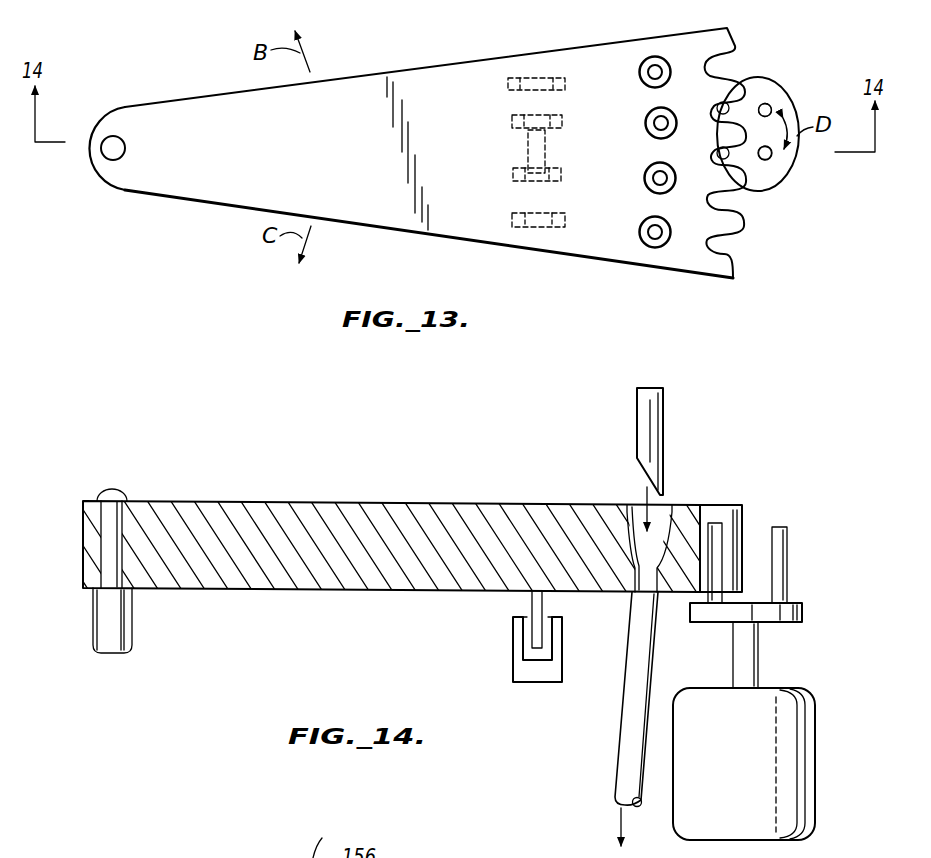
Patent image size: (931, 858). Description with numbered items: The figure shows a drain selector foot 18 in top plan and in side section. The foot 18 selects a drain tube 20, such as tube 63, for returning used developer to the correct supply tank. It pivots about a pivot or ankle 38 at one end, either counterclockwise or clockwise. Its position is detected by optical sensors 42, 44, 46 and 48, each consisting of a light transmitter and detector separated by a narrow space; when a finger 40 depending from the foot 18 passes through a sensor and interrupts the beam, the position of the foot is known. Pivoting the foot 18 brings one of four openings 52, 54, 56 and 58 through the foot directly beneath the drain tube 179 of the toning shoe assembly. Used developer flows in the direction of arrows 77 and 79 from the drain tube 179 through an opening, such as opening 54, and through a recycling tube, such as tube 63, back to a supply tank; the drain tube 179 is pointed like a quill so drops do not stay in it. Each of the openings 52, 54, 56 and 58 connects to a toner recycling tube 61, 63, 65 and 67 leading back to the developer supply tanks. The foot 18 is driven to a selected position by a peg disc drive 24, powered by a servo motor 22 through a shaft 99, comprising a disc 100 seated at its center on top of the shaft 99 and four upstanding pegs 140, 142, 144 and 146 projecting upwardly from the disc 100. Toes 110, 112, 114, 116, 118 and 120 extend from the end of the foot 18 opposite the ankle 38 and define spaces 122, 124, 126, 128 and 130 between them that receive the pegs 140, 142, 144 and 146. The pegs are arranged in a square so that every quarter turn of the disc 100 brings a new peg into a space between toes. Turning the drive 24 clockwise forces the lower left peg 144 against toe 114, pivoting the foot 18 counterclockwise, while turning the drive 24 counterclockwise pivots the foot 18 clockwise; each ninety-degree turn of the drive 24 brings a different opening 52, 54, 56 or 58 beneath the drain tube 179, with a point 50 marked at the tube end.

In FIG. 13, the drain selector foot 18 is at (360, 152).
In FIG. 14, the drain selector foot 18 is at (398, 508).
In FIG. 13, the pivot or ankle 38 is at (124, 149).
In FIG. 14, the pivot or ankle 38 is at (133, 612).
In FIG. 13, the finger 40 is at (527, 146).
In FIG. 14, the finger 40 is at (531, 598).
In FIG. 13, the optical sensor 42 is at (506, 86).
In FIG. 13, the optical sensor 44 is at (510, 122).
In FIG. 14, the optical sensor 44 is at (512, 652).
In FIG. 13, the optical sensor 46 is at (512, 174).
In FIG. 13, the optical sensor 48 is at (510, 218).
In FIG. 13, the opening 52 is at (655, 40).
In FIG. 13, the opening 54 is at (648, 126).
In FIG. 14, the opening 54 is at (624, 506).
In FIG. 13, the opening 56 is at (648, 172).
In FIG. 13, the opening 58 is at (650, 247).
In FIG. 13, the toner recycling tube 61 is at (641, 70).
In FIG. 13, the toner recycling tube 63 is at (650, 115).
In FIG. 14, the toner recycling tube 63 is at (627, 752).
In FIG. 13, the toner recycling tube 65 is at (648, 184).
In FIG. 13, the toner recycling tube 67 is at (641, 232).
In FIG. 13, the disc 100 is at (793, 108).
In FIG. 14, the disc 100 is at (806, 613).
In FIG. 13, the toe 110 is at (735, 40).
In FIG. 13, the toe 112 is at (730, 74).
In FIG. 13, the toe 114 is at (735, 150).
In FIG. 14, the toe 114 is at (733, 523).
In FIG. 13, the toe 116 is at (745, 178).
In FIG. 13, the toe 118 is at (722, 218).
In FIG. 13, the tooth 120 is at (738, 265).
In FIG. 13, the space 122 is at (717, 66).
In FIG. 13, the space 124 is at (717, 101).
In FIG. 13, the space 126 is at (719, 148).
In FIG. 13, the space 128 is at (721, 188).
In FIG. 13, the space 130 is at (713, 230).
In FIG. 13, the peg 140 is at (781, 99).
In FIG. 13, the peg 142 is at (766, 103).
In FIG. 13, the peg 144 is at (740, 160).
In FIG. 14, the peg 144 is at (716, 526).
In FIG. 13, the peg 146 is at (787, 169).
In FIG. 14, the peg 146 is at (785, 528).
In FIG. 13, the peg disc drive 24 is at (792, 176).
In FIG. 14, the peg disc drive 24 is at (814, 628).
In FIG. 14, the servo motor 22 is at (805, 757).
In FIG. 14, the shaft 99 is at (757, 670).
In FIG. 14, the drain tube 179 is at (664, 404).
In FIG. 14, the arrow 77 is at (646, 492).
In FIG. 14, the needle point 50 is at (667, 487).
In FIG. 14, the drain tube 20 is at (608, 724).
In FIG. 14, the arrow 79 is at (621, 814).